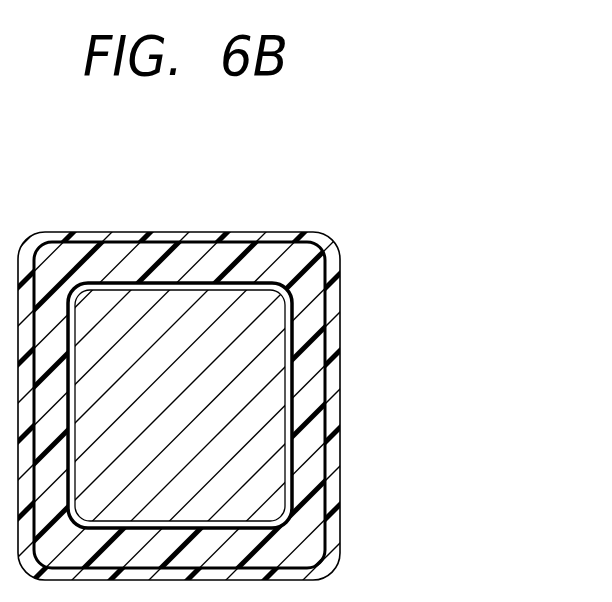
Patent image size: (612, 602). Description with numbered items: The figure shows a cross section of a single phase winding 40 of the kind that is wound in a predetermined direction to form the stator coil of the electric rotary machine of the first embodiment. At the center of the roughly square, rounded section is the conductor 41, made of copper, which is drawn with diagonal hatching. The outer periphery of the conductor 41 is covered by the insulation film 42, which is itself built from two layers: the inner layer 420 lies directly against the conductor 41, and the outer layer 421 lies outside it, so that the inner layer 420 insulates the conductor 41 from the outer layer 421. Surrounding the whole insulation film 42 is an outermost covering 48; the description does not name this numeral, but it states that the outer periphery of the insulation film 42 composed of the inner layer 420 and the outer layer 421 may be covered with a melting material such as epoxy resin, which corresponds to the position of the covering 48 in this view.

The winding 40 is at (234, 190).
The conductor 41 is at (277, 459).
The insulation film 42 is at (306, 301).
The inner layer 420 is at (325, 348).
The outer layer 421 is at (312, 282).
The outer covering layer 48 is at (330, 383).